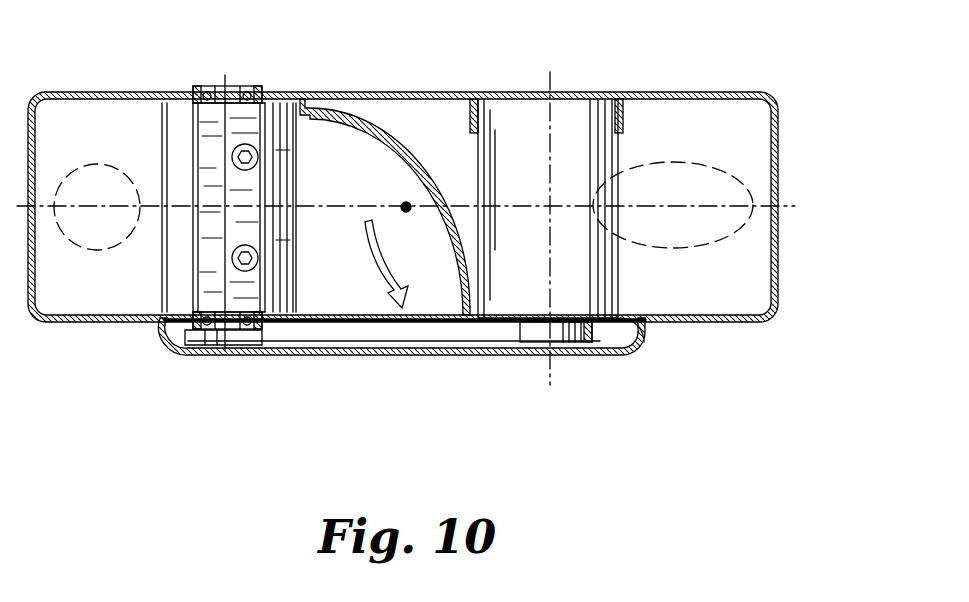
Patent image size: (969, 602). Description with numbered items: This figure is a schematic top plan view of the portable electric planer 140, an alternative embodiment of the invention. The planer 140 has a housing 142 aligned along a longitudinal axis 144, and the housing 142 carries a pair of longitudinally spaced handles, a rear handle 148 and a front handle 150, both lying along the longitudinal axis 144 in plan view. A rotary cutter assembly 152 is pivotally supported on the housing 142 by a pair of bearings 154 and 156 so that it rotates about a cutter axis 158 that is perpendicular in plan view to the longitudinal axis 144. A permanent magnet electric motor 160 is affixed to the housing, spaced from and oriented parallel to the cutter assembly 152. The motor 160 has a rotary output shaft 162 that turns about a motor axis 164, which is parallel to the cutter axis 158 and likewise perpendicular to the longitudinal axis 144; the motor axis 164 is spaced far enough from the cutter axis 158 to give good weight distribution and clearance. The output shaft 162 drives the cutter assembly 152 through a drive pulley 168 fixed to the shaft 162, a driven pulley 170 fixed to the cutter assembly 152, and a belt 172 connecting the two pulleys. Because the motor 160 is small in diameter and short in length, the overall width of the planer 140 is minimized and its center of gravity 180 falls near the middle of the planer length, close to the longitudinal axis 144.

The portable electric planer 140 is at (513, 392).
The housing 142 is at (373, 92).
The longitudinal axis 144 is at (788, 205).
The rear handle 148 is at (718, 163).
The front handle 150 is at (98, 165).
The rotary cutter assembly 152 is at (180, 118).
The bearing 154 is at (257, 90).
The bearing 156 is at (186, 327).
The cutter axis 158 is at (228, 362).
The permanent magnet electric motor 160 is at (515, 108).
The rotary output shaft 162 is at (632, 322).
The motor axis 164 is at (552, 358).
The drive pulley 168 is at (601, 322).
The driven pulley 170 is at (211, 352).
The belt 172 is at (403, 330).
The center of gravity 180 is at (410, 211).